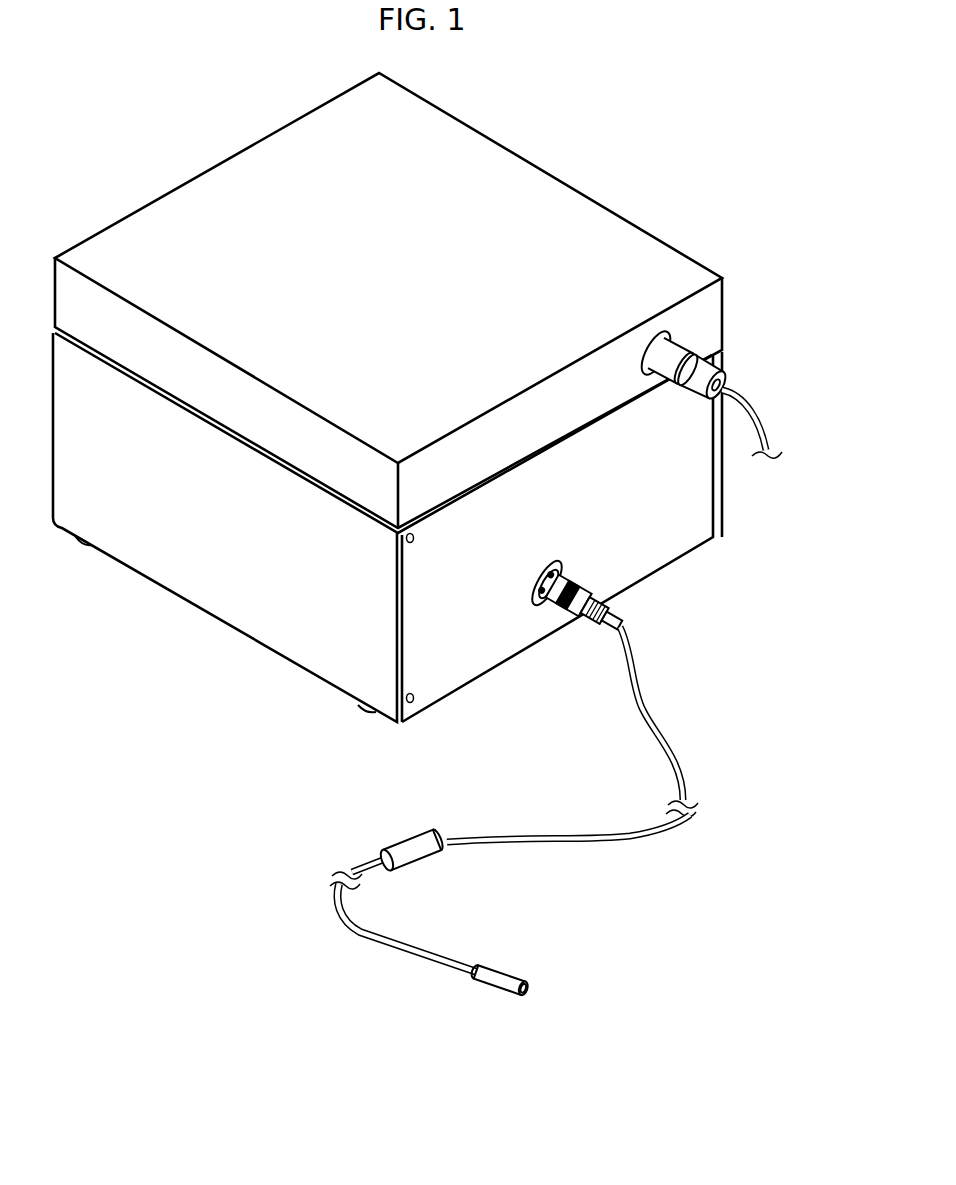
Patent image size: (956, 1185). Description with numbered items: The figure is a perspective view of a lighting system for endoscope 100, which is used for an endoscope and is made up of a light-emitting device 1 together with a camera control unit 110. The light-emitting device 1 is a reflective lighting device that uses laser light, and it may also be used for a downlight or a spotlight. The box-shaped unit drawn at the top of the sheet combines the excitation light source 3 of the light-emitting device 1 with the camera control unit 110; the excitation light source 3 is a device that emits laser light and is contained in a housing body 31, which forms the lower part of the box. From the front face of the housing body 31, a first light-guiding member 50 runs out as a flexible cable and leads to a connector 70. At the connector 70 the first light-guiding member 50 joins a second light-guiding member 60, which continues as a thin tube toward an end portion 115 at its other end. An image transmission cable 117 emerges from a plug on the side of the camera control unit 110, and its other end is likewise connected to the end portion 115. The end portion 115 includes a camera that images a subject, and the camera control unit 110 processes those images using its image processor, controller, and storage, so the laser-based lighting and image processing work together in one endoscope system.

The light-emitting device 1 is at (230, 811).
The lighting system for endoscope 100 is at (660, 148).
The camera control unit 110 is at (116, 220).
The excitation light source 3 is at (162, 587).
The housing body 31 is at (333, 655).
The image transmission cable 117 is at (743, 407).
The first light-guiding member 50 is at (657, 727).
The connector 70 is at (410, 839).
The second light-guiding member 60 is at (425, 947).
The end portion 115 is at (512, 970).